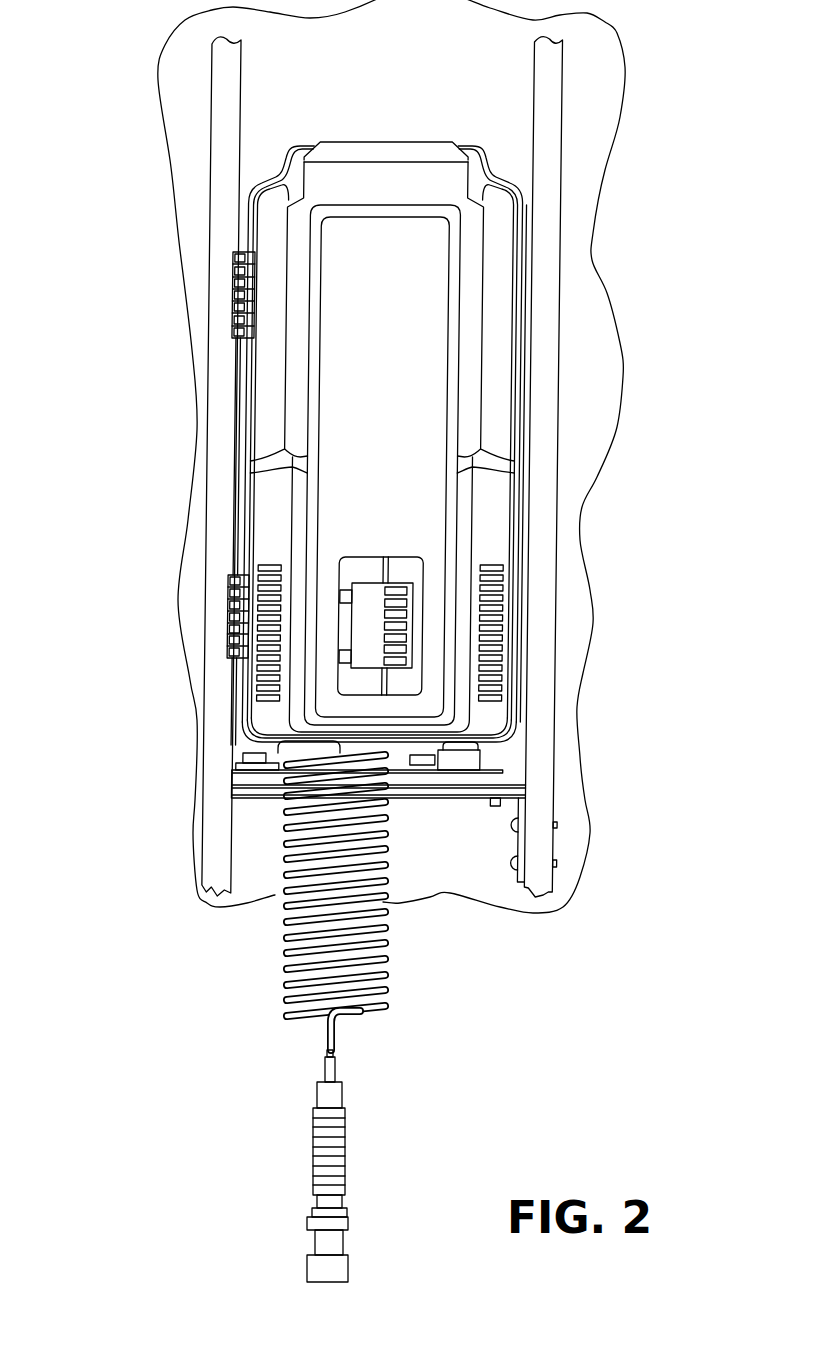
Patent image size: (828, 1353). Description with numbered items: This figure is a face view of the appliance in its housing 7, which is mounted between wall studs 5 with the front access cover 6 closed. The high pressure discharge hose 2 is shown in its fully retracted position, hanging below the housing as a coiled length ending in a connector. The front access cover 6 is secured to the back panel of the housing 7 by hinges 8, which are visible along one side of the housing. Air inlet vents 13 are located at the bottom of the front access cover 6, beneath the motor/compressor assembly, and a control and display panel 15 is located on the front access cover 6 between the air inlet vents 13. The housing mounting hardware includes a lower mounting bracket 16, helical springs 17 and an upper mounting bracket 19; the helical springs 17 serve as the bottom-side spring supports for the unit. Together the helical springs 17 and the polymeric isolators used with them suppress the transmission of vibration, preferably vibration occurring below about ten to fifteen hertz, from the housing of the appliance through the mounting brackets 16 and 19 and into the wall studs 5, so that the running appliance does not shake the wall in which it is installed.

The high pressure discharge hose 2 is at (407, 305).
The wall studs 5 is at (547, 417).
The front access cover 6 is at (393, 533).
The housing 7 is at (400, 373).
The hinges 8 is at (232, 642).
The air inlet vents 13 is at (493, 628).
The control and display panel 15 is at (408, 573).
The lower mounting bracket 16 is at (497, 777).
The helical springs 17 is at (503, 745).
The upper mounting bracket 19 is at (527, 218).